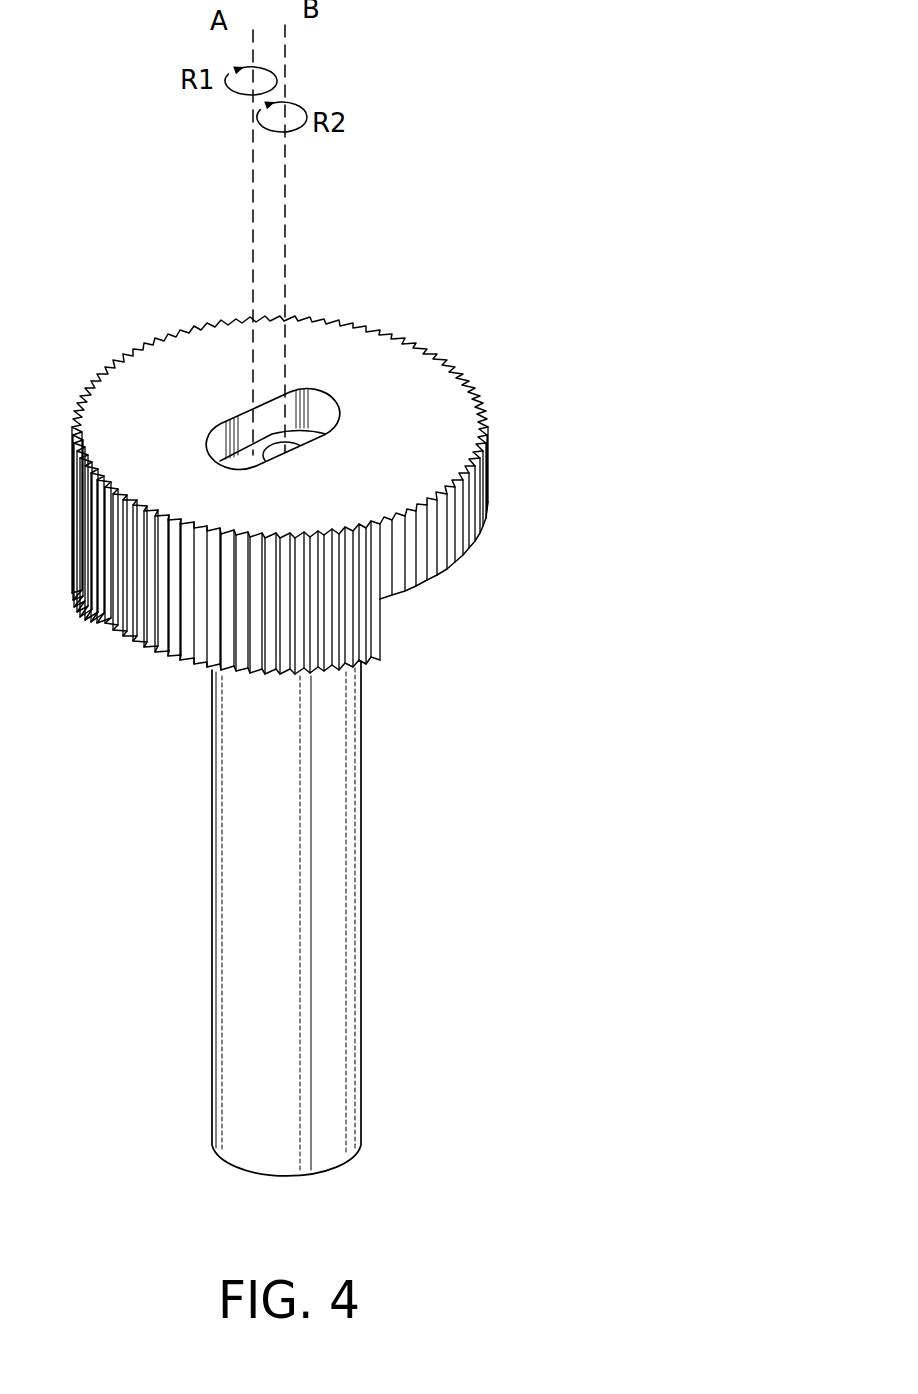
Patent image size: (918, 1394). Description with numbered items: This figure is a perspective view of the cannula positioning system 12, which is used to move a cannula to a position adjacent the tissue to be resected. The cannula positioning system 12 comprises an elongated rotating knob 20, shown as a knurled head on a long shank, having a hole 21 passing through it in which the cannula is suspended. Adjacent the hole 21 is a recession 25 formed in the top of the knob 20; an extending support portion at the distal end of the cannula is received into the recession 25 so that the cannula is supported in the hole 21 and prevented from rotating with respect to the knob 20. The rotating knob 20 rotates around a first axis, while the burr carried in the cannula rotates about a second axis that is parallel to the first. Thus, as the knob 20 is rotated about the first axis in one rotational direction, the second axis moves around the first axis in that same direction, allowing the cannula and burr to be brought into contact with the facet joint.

The cannula positioning system 12 is at (540, 373).
The rotating knob 20 is at (463, 525).
The hole 21 is at (289, 452).
The recession 25 is at (250, 463).